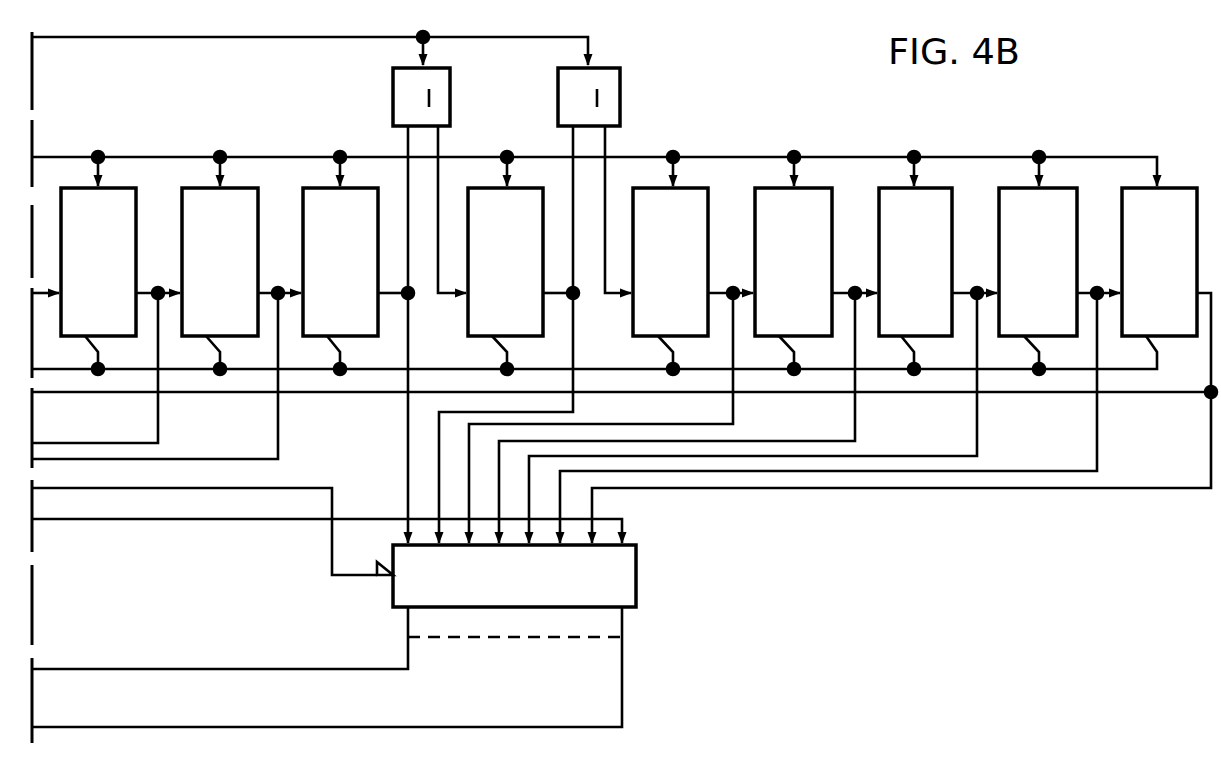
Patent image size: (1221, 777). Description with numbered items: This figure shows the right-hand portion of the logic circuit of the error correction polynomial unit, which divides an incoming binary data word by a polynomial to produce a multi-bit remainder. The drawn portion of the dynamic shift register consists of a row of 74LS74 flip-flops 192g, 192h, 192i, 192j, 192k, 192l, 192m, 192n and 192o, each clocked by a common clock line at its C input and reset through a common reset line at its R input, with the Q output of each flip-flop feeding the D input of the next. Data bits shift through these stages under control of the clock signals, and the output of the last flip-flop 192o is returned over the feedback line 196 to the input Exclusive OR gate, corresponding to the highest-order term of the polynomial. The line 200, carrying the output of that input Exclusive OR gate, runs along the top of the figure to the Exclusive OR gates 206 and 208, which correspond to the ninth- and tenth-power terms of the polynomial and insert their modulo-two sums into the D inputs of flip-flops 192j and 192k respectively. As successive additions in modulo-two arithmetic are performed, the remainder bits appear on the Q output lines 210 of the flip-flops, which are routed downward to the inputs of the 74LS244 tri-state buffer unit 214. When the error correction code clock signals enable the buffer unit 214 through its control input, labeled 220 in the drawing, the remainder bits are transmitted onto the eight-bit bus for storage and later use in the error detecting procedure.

The 74LS74 flip-flop 192g is at (72, 188).
The 74LS74 flip-flop 192h is at (192, 188).
The 74LS74 flip-flop 192i is at (312, 188).
The 74LS74 flip-flop 192j is at (479, 188).
The 74LS74 flip-flop 192k is at (645, 188).
The 74LS74 flip-flop 192l is at (765, 188).
The 74LS74 flip-flop 192m is at (889, 188).
The 74LS74 flip-flop 192n is at (1010, 188).
The last 74LS74 flip-flop 192o is at (1128, 188).
The feedback line 196 is at (1148, 393).
The line 200 is at (230, 38).
The Exclusive OR gate 206 is at (393, 92).
The Exclusive OR gate 208 is at (620, 100).
The Q output lines 210 is at (406, 467).
The 74LS244 tri-state buffer unit 214 is at (636, 575).
The enable line 220 is at (332, 554).